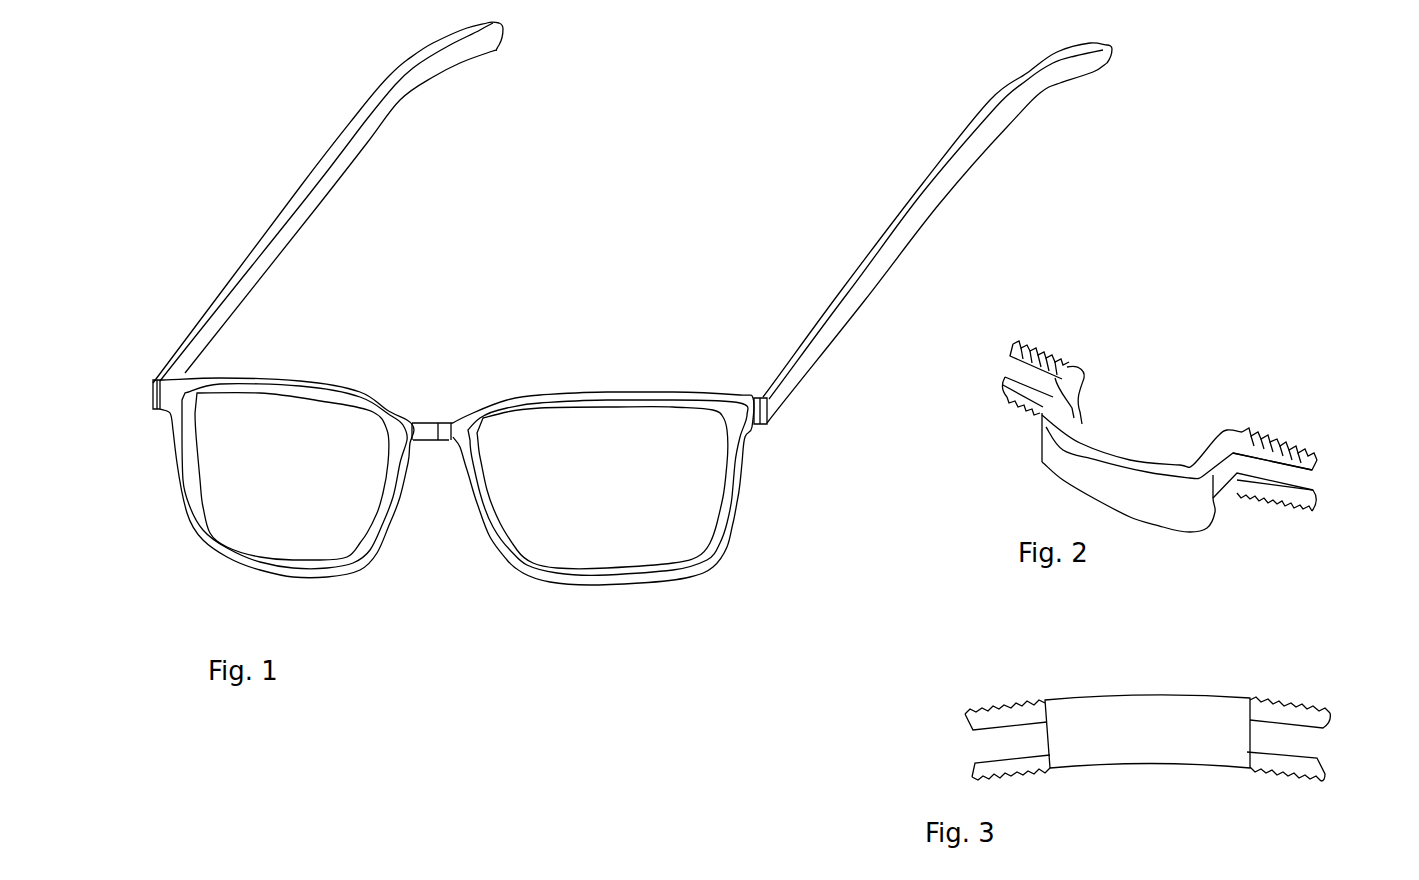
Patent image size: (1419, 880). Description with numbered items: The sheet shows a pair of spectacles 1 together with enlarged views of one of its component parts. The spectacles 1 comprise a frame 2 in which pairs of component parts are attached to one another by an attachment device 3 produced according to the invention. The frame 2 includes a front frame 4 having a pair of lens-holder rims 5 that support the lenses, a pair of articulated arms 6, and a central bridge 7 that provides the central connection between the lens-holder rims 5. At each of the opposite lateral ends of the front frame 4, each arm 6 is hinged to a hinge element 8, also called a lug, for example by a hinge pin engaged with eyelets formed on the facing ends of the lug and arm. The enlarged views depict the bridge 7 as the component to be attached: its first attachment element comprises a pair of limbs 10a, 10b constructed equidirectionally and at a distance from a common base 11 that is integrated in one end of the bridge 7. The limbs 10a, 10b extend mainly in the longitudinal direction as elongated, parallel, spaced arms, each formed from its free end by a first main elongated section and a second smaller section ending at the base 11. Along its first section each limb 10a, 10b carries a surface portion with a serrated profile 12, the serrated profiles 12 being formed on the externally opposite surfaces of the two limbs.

In FIG. 1, the pair of spectacles 1 is at (549, 268).
In FIG. 1, the frame 2 is at (781, 458).
In FIG. 1, the attachment device 3 is at (420, 418).
In FIG. 1, the front frame 4 is at (524, 578).
In FIG. 1, the lens-holder rims 5 is at (655, 387).
In FIG. 1, the articulated arms 6 is at (332, 173).
In FIG. 1, the central bridge 7 is at (433, 433).
In FIG. 2, the central bridge 7 is at (1064, 492).
In FIG. 3, the central bridge 7 is at (1142, 740).
In FIG. 1, the hinge element 8 is at (150, 402).
In FIG. 2, the limb 10a is at (1012, 350).
In FIG. 3, the limb 10a is at (965, 713).
In FIG. 2, the limb 10b is at (1004, 378).
In FIG. 3, the limb 10b is at (975, 764).
In FIG. 2, the common base 11 is at (1213, 505).
In FIG. 2, the serrated profile 12 is at (1060, 351).
In FIG. 3, the serrated profile 12 is at (1018, 698).